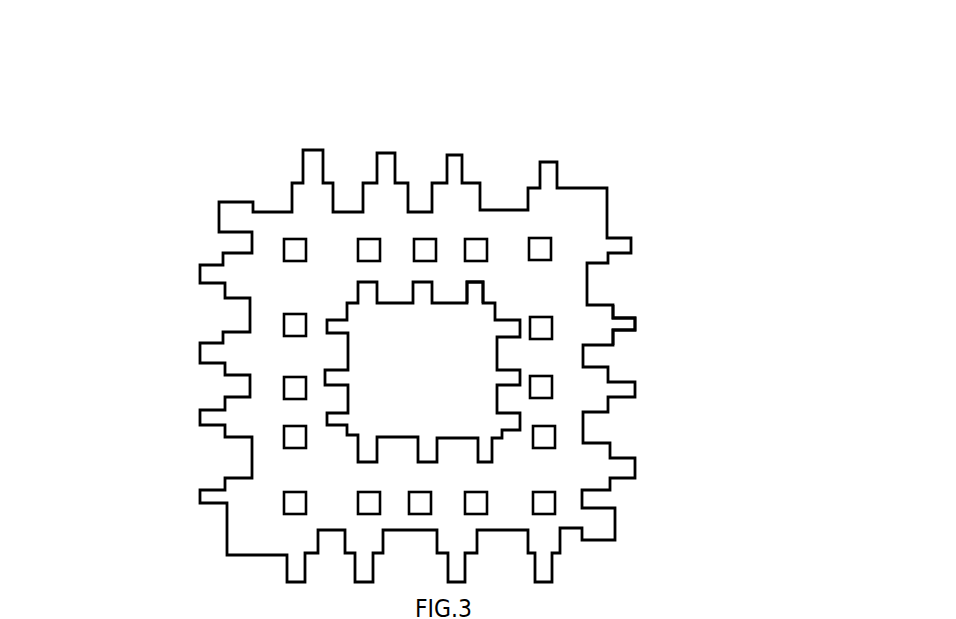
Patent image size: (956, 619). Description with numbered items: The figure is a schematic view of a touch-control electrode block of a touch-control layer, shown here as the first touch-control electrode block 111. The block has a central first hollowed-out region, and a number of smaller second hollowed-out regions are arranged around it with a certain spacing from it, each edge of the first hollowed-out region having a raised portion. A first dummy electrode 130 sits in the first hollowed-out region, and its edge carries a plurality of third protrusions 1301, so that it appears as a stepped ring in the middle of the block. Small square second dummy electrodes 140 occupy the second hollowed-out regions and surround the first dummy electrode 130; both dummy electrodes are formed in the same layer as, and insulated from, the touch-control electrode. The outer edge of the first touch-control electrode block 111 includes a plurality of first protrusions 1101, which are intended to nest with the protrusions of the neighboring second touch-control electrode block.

The first touch-control electrode block 111 is at (320, 45).
The first protrusion 1101 is at (645, 338).
The first dummy electrode 130 is at (337, 301).
The third protrusion 1301 is at (490, 272).
The second dummy electrode 140 is at (273, 371).